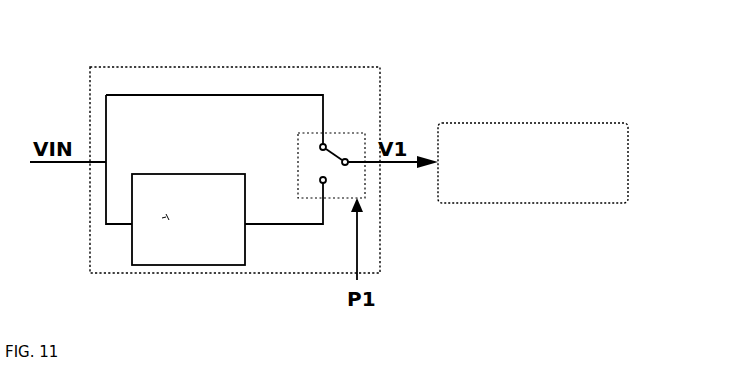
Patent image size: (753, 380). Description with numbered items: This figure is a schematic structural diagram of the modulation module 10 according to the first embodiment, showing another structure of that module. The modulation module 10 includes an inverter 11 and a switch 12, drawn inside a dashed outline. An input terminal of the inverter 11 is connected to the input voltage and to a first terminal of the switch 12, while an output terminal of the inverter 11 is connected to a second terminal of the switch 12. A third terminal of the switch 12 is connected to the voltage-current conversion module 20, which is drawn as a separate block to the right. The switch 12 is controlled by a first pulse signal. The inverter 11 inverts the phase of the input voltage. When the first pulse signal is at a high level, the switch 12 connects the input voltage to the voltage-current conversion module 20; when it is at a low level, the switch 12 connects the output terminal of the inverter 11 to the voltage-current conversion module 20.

The modulation module 10 is at (235, 67).
The inverter 11 is at (180, 174).
The switch 12 is at (334, 133).
The voltage-current conversion module 20 is at (533, 163).